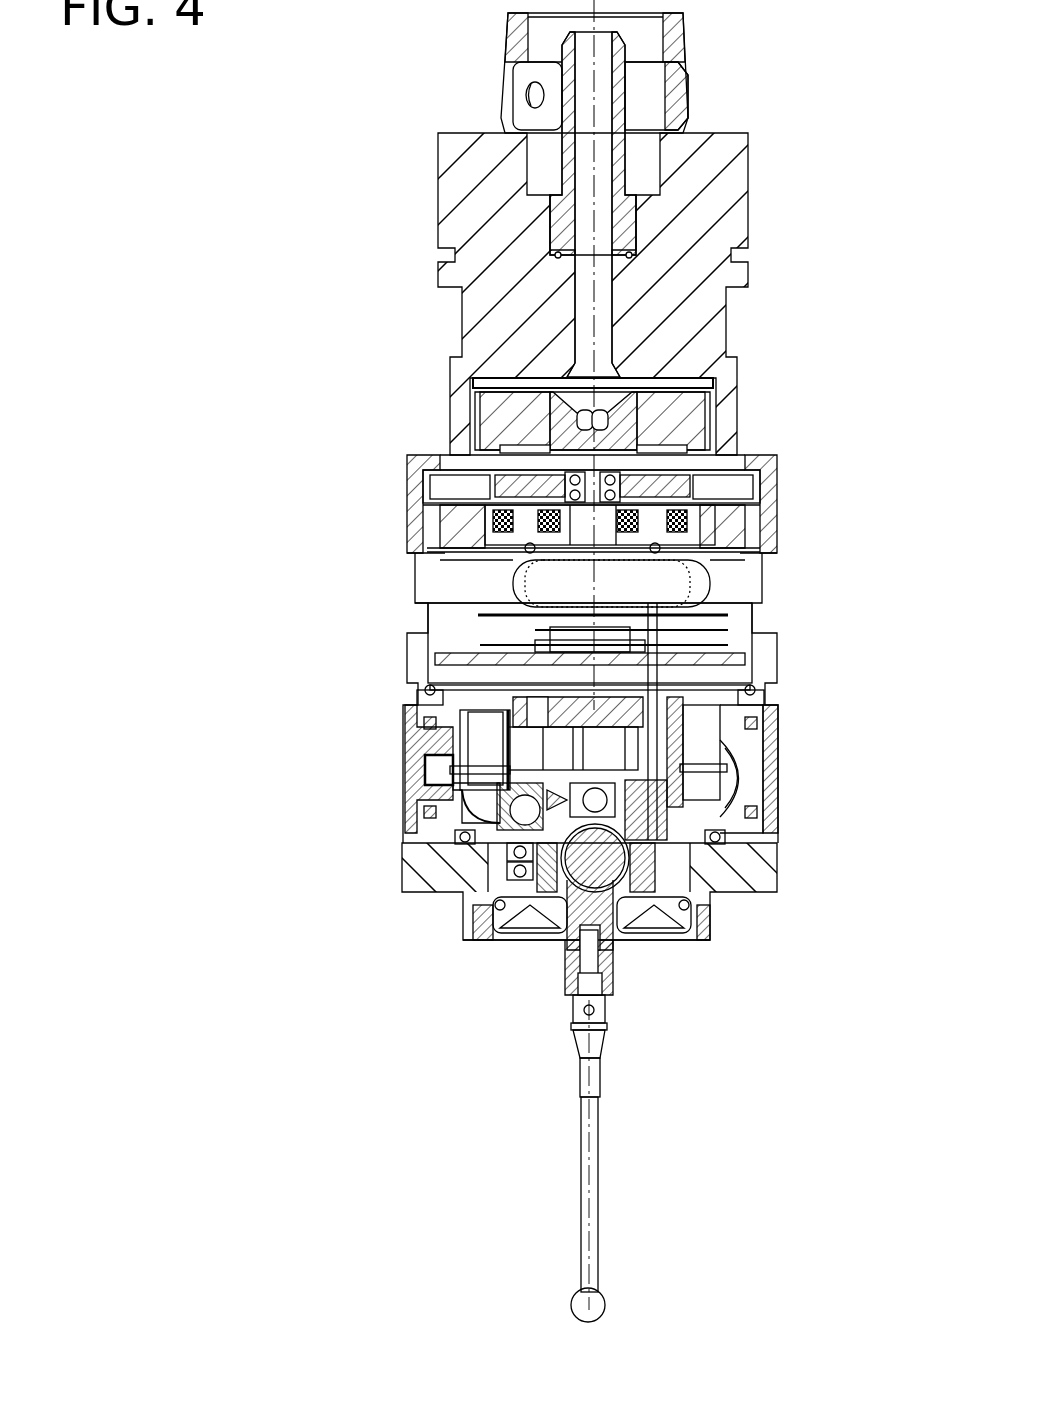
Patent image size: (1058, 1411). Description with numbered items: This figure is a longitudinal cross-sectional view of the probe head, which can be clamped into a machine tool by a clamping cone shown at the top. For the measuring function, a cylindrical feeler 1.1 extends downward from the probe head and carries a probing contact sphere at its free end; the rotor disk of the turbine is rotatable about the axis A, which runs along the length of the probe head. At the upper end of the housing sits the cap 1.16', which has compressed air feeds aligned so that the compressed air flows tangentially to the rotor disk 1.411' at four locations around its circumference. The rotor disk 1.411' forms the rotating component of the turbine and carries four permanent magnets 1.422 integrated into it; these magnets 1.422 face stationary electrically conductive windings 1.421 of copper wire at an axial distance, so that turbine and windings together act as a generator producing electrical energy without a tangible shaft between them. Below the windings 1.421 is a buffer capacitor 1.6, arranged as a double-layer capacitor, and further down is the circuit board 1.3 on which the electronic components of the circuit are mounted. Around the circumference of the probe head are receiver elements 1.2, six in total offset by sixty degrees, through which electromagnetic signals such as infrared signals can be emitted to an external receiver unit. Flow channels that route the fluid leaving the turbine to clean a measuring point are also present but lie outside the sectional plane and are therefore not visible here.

The cylindrical feeler 1.1 is at (592, 1173).
The receiver element 1.2 is at (410, 780).
The circuit board 1.3 is at (443, 547).
The buffer capacitor 1.6 is at (700, 577).
The cap 1.16' is at (667, 475).
The rotor disk 1.411' is at (386, 620).
The windings 1.421 is at (733, 520).
The magnets 1.422 is at (737, 450).
The axis A is at (589, 1322).